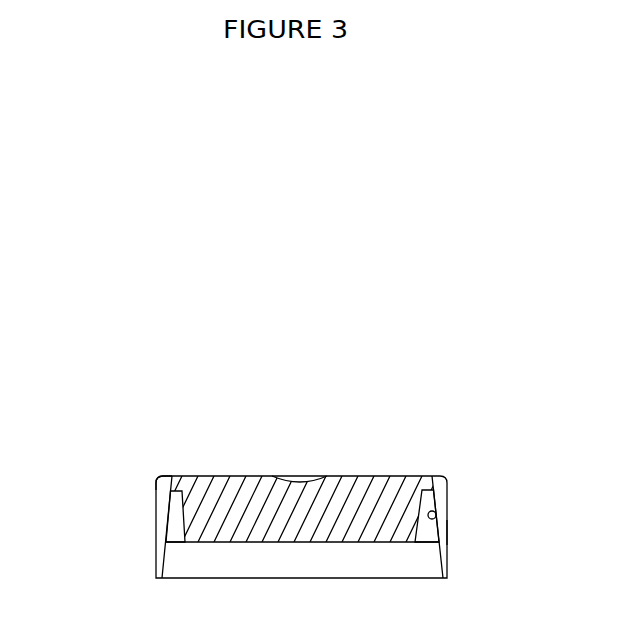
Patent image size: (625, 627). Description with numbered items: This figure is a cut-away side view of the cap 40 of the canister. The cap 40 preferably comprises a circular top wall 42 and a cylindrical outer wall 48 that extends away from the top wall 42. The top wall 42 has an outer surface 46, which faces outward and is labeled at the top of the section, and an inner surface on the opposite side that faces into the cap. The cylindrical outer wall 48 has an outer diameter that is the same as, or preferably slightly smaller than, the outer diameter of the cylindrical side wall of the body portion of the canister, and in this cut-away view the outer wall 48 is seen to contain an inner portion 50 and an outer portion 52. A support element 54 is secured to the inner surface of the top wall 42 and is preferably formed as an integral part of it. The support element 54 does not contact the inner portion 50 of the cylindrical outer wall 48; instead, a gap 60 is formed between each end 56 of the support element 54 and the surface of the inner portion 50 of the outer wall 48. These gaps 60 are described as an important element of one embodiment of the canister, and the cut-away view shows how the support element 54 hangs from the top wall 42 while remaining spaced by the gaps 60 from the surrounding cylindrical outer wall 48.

The cap 40 is at (158, 445).
The circular top wall 42 is at (397, 477).
The outer surface 46 is at (350, 475).
The cylindrical outer wall 48 is at (158, 478).
The inner portion 50 is at (436, 514).
The outer portion 52 is at (448, 530).
The support element 54 is at (248, 517).
The end of the support element 56 is at (423, 502).
The gap 60 is at (178, 513).